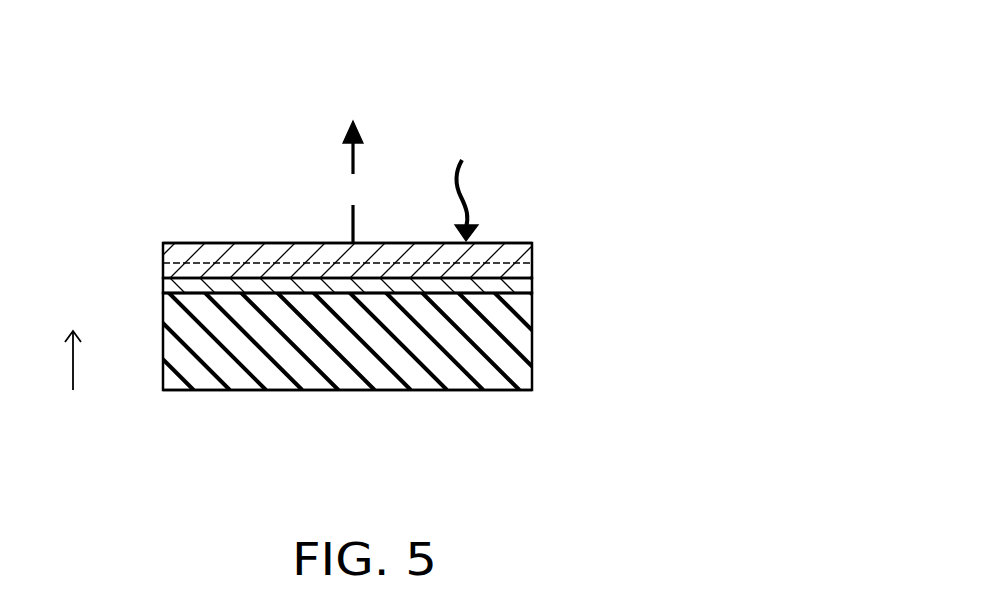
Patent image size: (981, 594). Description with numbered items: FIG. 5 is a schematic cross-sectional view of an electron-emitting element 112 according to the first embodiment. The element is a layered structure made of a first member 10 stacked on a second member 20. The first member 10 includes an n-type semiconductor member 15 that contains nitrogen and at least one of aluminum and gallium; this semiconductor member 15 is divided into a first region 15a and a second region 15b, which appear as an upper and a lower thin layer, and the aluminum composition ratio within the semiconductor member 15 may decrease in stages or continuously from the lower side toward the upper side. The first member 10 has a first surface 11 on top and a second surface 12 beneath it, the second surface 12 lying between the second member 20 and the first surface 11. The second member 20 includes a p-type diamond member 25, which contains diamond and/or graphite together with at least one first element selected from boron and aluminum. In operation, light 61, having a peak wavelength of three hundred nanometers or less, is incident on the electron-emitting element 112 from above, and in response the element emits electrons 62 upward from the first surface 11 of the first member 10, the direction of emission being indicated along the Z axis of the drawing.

The electron-emitting element 112 is at (571, 108).
The first member 10 is at (492, 253).
The first surface 11 is at (230, 243).
The second surface 12 is at (242, 293).
The semiconductor member 15 is at (630, 241).
The first region 15a is at (510, 253).
The second region 15b is at (510, 283).
The second member 20 is at (507, 338).
The diamond member 25 is at (503, 364).
The light 61 is at (462, 168).
The electrons 62 is at (350, 157).